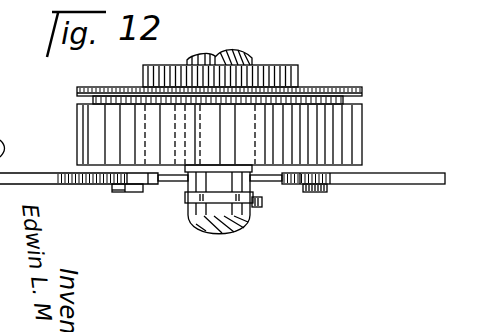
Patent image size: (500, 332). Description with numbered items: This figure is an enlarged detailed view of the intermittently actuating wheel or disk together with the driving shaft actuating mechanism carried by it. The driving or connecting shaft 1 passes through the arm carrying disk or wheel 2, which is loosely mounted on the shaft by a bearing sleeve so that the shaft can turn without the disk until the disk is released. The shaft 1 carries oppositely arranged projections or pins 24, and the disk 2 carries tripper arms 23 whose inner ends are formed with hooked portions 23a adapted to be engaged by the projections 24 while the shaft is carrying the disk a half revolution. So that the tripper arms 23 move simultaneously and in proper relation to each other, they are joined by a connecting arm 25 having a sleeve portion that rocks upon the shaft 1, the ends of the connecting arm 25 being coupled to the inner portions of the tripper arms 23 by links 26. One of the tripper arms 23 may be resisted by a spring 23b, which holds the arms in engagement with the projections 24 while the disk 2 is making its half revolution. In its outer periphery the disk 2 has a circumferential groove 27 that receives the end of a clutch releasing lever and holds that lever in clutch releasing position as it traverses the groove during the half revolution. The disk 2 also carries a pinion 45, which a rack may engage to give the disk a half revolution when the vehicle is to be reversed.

The driving or connecting shaft 1 is at (187, 228).
The arm carrying disk or wheel 2 is at (353, 137).
The tripper arms 23 is at (36, 162).
The hooked portions 23a is at (308, 180).
The spring 23b is at (378, 165).
The projections or pins 24 is at (273, 175).
The connecting arm 25 is at (132, 189).
The links 26 is at (115, 193).
The circumferential groove 27 is at (350, 98).
The pinion 45 is at (295, 73).